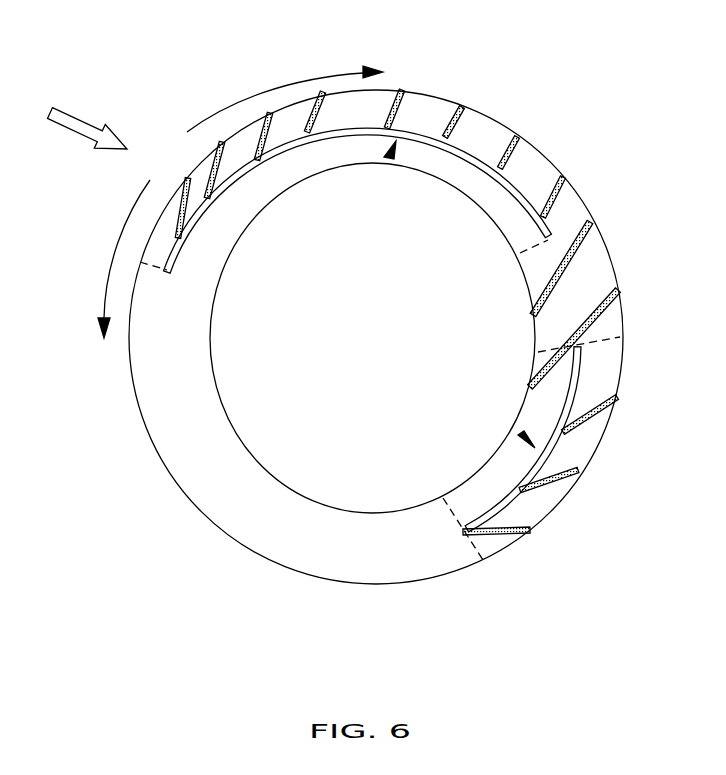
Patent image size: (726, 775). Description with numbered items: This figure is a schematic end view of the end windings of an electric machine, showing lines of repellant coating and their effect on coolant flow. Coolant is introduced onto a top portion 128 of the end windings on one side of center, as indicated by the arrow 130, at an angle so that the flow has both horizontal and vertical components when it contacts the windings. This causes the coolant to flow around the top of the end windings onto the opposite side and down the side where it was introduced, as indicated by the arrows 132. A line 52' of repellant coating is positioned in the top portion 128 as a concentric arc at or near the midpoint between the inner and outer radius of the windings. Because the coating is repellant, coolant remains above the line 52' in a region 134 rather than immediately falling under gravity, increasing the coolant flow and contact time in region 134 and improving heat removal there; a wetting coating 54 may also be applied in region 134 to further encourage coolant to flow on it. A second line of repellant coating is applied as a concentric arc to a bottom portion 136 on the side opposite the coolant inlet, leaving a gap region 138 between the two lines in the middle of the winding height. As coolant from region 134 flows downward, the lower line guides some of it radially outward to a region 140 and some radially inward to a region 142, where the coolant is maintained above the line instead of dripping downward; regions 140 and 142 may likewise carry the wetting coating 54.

The top portion 128 is at (505, 125).
The arrow 130 is at (70, 137).
The arrows 132 is at (284, 80).
The region 134 is at (412, 103).
The line of repellant coating 52' is at (370, 151).
The wetting coating 54 is at (480, 123).
The bottom portion 136 is at (553, 508).
The gap region 138 is at (570, 302).
The region 140 is at (583, 442).
The region 142 is at (490, 477).